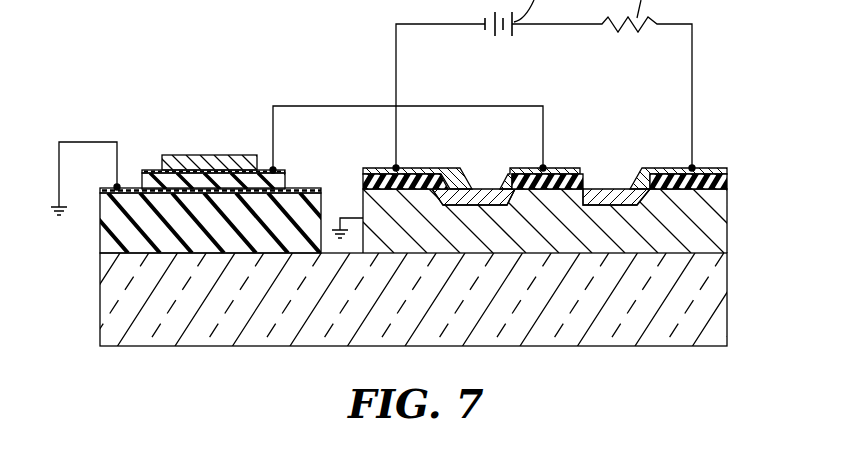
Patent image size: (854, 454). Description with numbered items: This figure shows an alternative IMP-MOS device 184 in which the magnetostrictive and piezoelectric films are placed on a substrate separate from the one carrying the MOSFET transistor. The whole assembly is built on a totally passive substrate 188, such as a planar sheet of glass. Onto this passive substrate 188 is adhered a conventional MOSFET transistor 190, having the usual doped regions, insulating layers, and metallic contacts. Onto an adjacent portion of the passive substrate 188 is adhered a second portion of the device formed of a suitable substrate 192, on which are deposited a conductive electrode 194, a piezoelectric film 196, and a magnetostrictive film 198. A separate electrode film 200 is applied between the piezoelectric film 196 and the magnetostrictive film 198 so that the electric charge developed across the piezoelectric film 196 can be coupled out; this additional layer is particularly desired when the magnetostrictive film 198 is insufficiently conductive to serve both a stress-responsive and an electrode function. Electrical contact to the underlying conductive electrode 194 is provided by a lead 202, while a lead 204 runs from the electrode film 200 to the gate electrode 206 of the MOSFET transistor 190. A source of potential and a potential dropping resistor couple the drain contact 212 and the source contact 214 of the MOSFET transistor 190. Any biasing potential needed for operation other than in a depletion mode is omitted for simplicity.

The IMP-MOS device 184 is at (132, 92).
The passive substrate 188 is at (718, 347).
The MOSFET transistor 190 is at (728, 227).
The substrate 192 is at (110, 237).
The conductive electrode 194 is at (101, 185).
The piezoelectric film 196 is at (141, 174).
The magnetostrictive film 198 is at (192, 154).
The electrode film 200 is at (272, 167).
The lead 202 is at (62, 141).
The lead 204 is at (341, 104).
The gate electrode 206 is at (573, 167).
The drain contact 212 is at (375, 167).
The source contact 214 is at (719, 167).